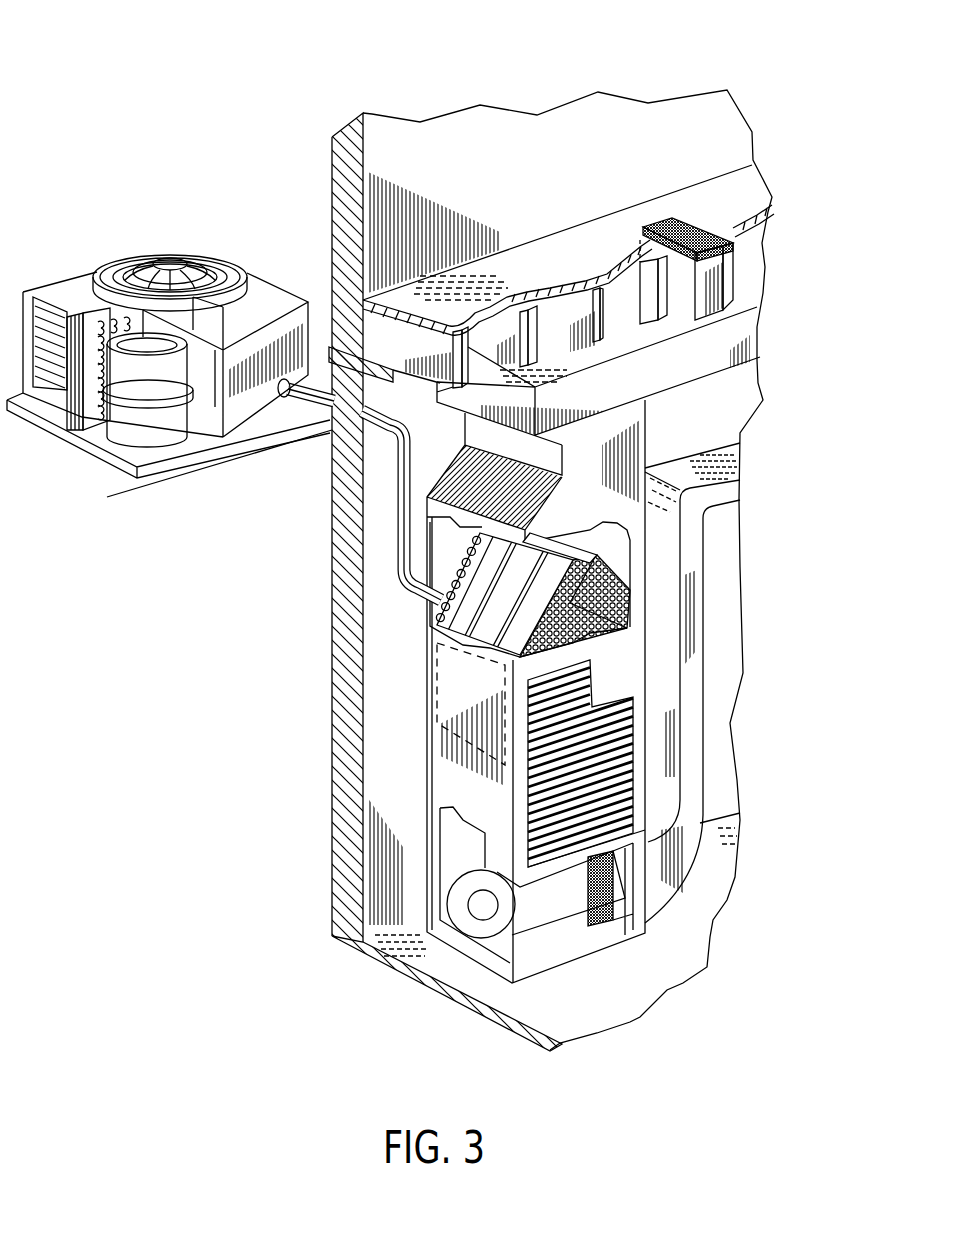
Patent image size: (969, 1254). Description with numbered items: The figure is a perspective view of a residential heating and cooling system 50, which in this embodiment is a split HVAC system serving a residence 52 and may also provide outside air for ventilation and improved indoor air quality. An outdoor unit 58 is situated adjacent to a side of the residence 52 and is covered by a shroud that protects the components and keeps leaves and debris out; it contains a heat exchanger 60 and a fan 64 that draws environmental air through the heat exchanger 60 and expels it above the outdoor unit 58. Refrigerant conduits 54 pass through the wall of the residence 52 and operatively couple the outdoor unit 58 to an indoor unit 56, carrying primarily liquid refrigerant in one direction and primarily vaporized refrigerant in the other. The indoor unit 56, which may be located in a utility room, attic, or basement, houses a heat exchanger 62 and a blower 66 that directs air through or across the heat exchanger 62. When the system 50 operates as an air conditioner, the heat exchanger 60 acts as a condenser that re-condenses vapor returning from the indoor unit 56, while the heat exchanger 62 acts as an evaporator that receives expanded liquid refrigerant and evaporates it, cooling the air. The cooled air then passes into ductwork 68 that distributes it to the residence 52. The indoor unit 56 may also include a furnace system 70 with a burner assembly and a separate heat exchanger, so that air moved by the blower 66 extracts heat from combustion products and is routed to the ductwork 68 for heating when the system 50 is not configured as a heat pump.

The residential heating and cooling system 50 is at (160, 82).
The residence 52 is at (465, 135).
The refrigerant conduits 54 is at (398, 500).
The indoor unit 56 is at (403, 748).
The outdoor unit 58 is at (126, 244).
The heat exchanger 60 is at (103, 323).
The heat exchanger 62 is at (487, 620).
The fan 64 is at (187, 257).
The blower 66 is at (477, 927).
The ductwork 68 is at (690, 357).
The furnace system 70 is at (440, 690).